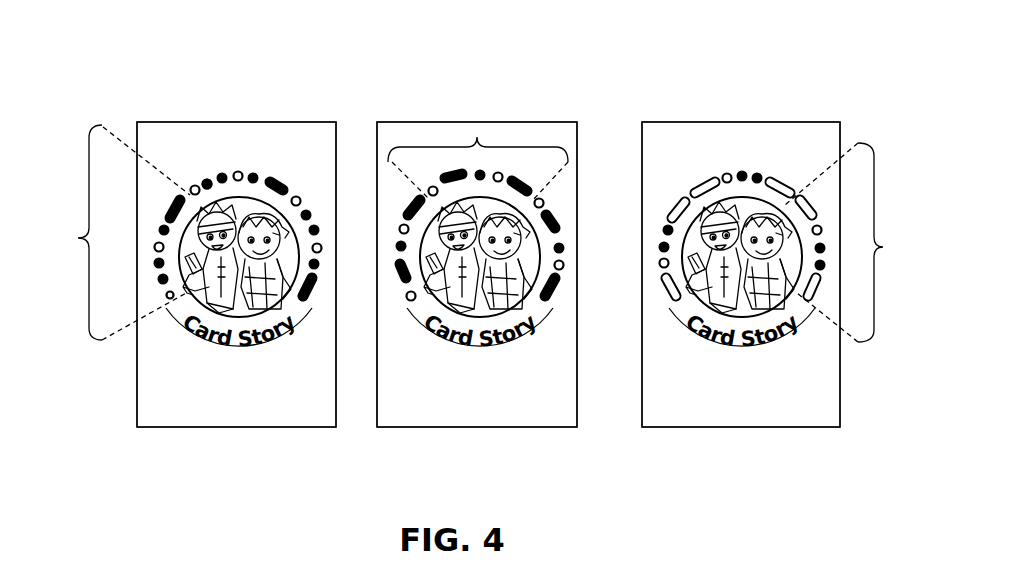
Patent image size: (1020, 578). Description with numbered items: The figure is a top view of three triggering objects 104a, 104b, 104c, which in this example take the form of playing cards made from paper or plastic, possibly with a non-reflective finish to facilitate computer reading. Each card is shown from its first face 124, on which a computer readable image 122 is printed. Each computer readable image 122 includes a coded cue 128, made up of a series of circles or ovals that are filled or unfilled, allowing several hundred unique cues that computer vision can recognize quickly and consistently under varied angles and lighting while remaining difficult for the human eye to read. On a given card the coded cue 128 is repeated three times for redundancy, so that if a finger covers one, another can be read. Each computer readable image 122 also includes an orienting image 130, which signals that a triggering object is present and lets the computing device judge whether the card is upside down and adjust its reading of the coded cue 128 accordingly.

The triggering object 104a is at (520, 122).
The triggering object 104b is at (780, 122).
The triggering object 104c is at (240, 122).
The computer readable image 122 is at (206, 168).
The first face 124 is at (259, 398).
The coded cue 128 is at (503, 75).
The orienting image 130 is at (242, 212).